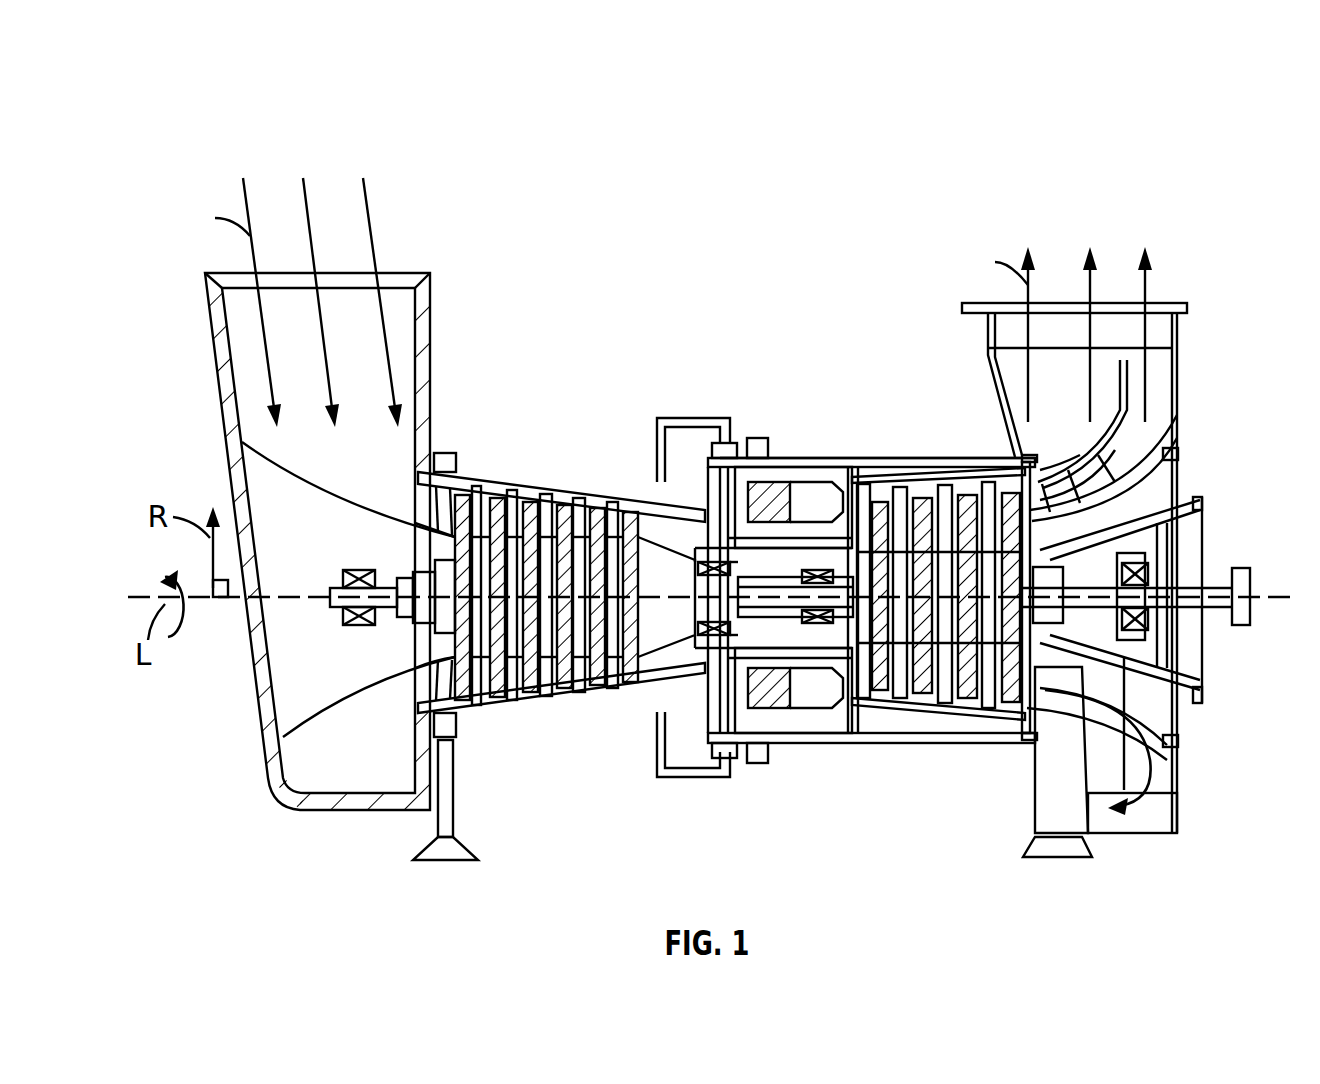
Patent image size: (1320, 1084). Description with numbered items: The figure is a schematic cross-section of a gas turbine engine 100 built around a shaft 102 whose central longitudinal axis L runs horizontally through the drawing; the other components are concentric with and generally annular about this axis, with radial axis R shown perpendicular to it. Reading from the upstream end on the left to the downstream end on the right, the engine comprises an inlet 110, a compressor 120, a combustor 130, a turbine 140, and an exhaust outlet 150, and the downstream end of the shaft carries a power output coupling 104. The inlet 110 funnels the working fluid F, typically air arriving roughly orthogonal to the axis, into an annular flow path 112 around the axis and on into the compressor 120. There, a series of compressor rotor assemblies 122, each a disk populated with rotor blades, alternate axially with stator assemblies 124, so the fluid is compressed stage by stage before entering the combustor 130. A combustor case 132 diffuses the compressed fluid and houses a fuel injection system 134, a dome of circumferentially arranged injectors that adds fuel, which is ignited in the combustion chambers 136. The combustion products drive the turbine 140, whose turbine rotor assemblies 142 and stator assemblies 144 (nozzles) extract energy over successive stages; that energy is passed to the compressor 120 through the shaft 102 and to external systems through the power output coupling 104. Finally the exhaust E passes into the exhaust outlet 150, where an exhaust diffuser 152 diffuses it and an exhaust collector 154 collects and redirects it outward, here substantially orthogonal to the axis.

The gas turbine engine 100 is at (180, 70).
The shaft 102 is at (338, 585).
The power output coupling 104 is at (1242, 566).
The inlet 110 is at (198, 140).
The annular flow path 112 is at (400, 487).
The compressor 120 is at (460, 140).
The compressor rotor assembly 122 is at (530, 694).
The stator assembly 124 is at (477, 496).
The combustor 130 is at (700, 140).
The combustor case 132 is at (788, 462).
The fuel injection system 134 is at (780, 482).
The combustion chamber 136 is at (812, 497).
The turbine 140 is at (1020, 140).
The turbine rotor assembly 142 is at (880, 692).
The stator assembly 144 is at (988, 486).
The exhaust outlet 150 is at (970, 175).
The exhaust diffuser 152 is at (1060, 460).
The exhaust collector 154 is at (1000, 362).